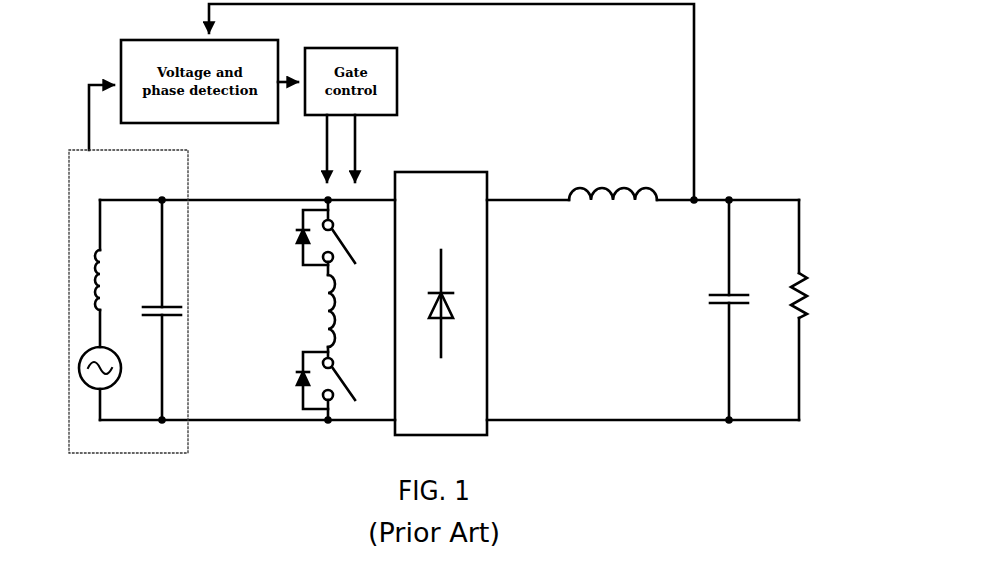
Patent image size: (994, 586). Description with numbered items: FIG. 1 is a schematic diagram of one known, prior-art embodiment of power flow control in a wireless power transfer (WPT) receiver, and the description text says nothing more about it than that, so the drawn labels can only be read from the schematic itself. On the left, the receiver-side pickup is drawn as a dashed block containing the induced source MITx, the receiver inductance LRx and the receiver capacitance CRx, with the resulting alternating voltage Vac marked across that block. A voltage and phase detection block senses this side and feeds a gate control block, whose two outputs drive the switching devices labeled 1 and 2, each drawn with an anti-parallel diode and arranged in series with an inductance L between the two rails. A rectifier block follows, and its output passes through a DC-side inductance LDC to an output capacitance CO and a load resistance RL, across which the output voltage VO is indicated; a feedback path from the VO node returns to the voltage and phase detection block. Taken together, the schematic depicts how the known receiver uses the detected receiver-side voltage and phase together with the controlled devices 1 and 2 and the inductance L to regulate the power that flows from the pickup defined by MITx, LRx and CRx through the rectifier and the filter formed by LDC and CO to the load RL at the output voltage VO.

The switch S1 1 is at (331, 237).
The switch S2 2 is at (334, 386).
The inductor L is at (316, 316).
The DC inductor L_DC LDC is at (613, 178).
The output capacitor C_O CO is at (718, 310).
The load resistor R_L RL is at (783, 310).
The output voltage V_O VO is at (754, 174).
The AC voltage V_ac Vac is at (128, 301).
The receiver inductor L_Rx LRx is at (77, 273).
The receiver capacitor C_Rx CRx is at (176, 310).
The induced voltage source jωMI_Tx MITx is at (62, 383).